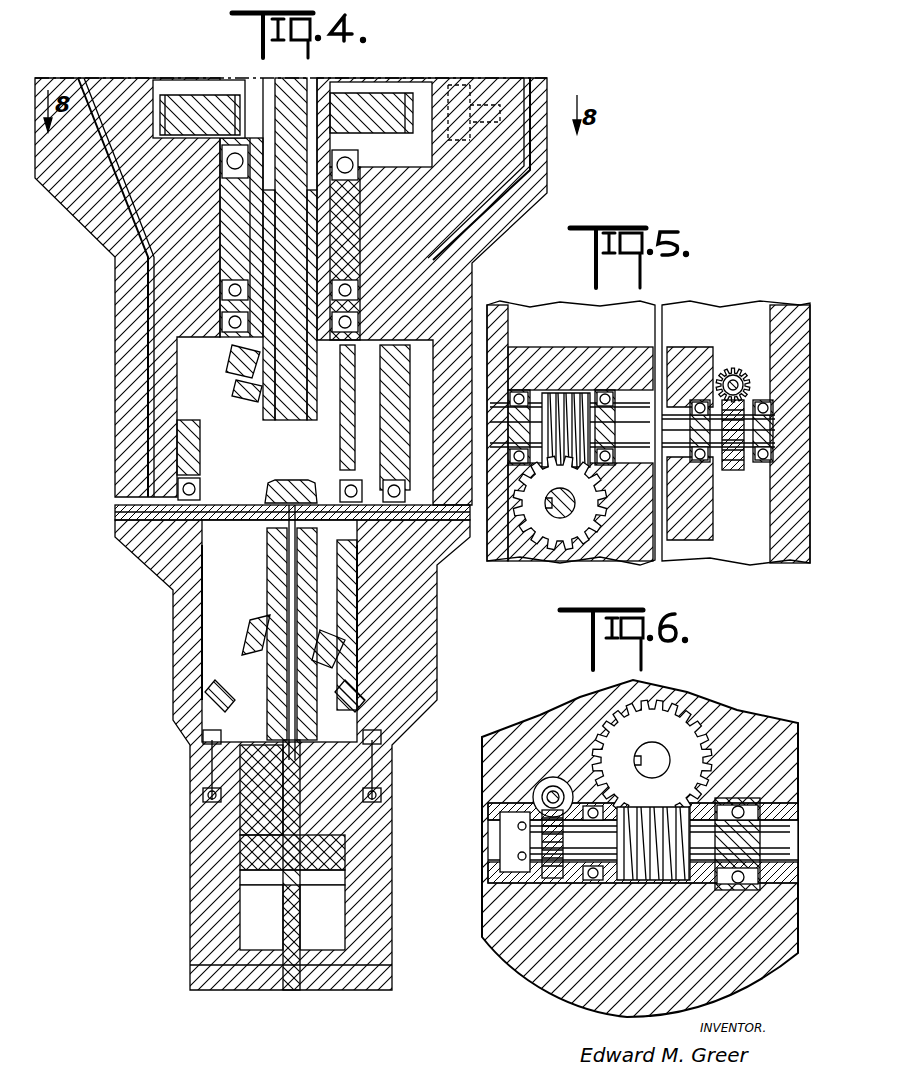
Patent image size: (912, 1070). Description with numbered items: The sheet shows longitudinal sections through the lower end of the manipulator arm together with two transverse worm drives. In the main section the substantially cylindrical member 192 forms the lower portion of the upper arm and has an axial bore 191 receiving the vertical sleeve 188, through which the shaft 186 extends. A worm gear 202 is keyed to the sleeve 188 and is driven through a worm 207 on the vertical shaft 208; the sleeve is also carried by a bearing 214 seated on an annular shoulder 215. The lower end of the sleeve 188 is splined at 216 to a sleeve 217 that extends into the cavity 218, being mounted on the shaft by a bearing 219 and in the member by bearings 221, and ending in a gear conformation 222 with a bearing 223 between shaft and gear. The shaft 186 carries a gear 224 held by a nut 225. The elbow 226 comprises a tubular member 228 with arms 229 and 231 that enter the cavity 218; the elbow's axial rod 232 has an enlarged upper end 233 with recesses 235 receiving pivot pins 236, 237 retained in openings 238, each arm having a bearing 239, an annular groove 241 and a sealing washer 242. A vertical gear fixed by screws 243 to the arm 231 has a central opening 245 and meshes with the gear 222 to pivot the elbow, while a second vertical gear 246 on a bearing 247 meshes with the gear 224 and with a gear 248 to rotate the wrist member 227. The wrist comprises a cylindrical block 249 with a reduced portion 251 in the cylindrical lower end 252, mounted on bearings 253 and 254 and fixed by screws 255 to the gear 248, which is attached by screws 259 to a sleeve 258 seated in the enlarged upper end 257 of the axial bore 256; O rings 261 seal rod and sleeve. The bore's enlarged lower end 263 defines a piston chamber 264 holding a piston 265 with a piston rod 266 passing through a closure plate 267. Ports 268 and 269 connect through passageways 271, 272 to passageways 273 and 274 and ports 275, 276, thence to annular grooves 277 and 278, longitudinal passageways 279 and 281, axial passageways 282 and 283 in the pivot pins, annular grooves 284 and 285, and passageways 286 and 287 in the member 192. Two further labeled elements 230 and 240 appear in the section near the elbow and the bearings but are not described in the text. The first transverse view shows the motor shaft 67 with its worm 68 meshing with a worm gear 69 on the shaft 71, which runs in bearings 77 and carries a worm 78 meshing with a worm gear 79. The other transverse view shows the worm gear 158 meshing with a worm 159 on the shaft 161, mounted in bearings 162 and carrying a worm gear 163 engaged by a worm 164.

In FIG. 4, the worm gear 202 is at (178, 97).
In FIG. 4, the vertical sleeve 188 is at (358, 94).
In FIG. 4, the vertical shaft 208 is at (466, 88).
In FIG. 4, the worm 207 is at (500, 108).
In FIG. 4, the cylindrical member 192 is at (508, 158).
In FIG. 4, the bearing 214 is at (228, 160).
In FIG. 4, the annular shoulder 215 is at (228, 182).
In FIG. 4, the spline 216 is at (250, 236).
In FIG. 4, the shaft 186 is at (333, 232).
In FIG. 4, the axial bore 191 is at (335, 250).
In FIG. 4, the sleeve 217 is at (340, 268).
In FIG. 4, the bearing 219 is at (345, 294).
In FIG. 4, the bearing 240 is at (362, 325).
In FIG. 4, the passageway 287 is at (488, 212).
In FIG. 4, the passageway 286 is at (140, 278).
In FIG. 4, the bearings 221 is at (228, 290).
In FIG. 4, the cavity 218 is at (185, 342).
In FIG. 4, the gear conformation 222 is at (233, 357).
In FIG. 4, the bearing 223 is at (235, 386).
In FIG. 4, the screws 243 is at (470, 345).
In FIG. 4, the gear 224 is at (262, 432).
In FIG. 4, the enlarged upper end 233 is at (270, 478).
In FIG. 4, the recesses 235 is at (266, 490).
In FIG. 4, the bearing 247 is at (337, 567).
In FIG. 4, the nut 225 is at (420, 432).
In FIG. 4, the arm 231 is at (410, 455).
In FIG. 4, the central opening 245 is at (405, 485).
In FIG. 4, the arm 229 is at (185, 450).
In FIG. 4, the bearing 239 is at (180, 485).
In FIG. 4, the openings 238 is at (127, 510).
In FIG. 4, the pivot pin 236 is at (118, 516).
In FIG. 4, the annular groove 284 is at (120, 548).
In FIG. 4, the axial passageway 282 is at (142, 570).
In FIG. 4, the sleeve 230 is at (242, 540).
In FIG. 4, the axial cylindrical rod 232 is at (283, 590).
In FIG. 4, the pivot pin 237 is at (430, 522).
In FIG. 4, the annular groove 285 is at (402, 523).
In FIG. 4, the washer 242 is at (392, 626).
In FIG. 4, the axial passageway 283 is at (400, 640).
In FIG. 4, the annular groove 241 is at (385, 652).
In FIG. 4, the second vertical gear 246 is at (400, 662).
In FIG. 4, the longitudinal passageway 281 is at (400, 672).
In FIG. 4, the longitudinal passageway 279 is at (200, 610).
In FIG. 4, the sleeve 258 is at (215, 630).
In FIG. 4, the elbow 226 is at (172, 638).
In FIG. 4, the port 275 is at (222, 655).
In FIG. 4, the gear 248 is at (235, 672).
In FIG. 4, the screws 259 is at (222, 700).
In FIG. 4, the passageway 273 is at (232, 710).
In FIG. 4, the enlarged upper end of bore 257 is at (215, 725).
In FIG. 4, the bearing 254 is at (220, 748).
In FIG. 4, the annular groove 278 is at (226, 770).
In FIG. 4, the axial bore 256 is at (210, 790).
In FIG. 4, the bearing 253 is at (206, 800).
In FIG. 4, the O rings 261 is at (372, 678).
In FIG. 4, the annular groove 277 is at (382, 700).
In FIG. 4, the tubular member 228 is at (388, 708).
In FIG. 4, the port 276 is at (432, 700).
In FIG. 4, the screws 255 is at (386, 740).
In FIG. 4, the passageway 274 is at (382, 770).
In FIG. 4, the reduced diameter portion 251 is at (376, 790).
In FIG. 4, the cylindrical lower end 252 is at (376, 806).
In FIG. 4, the passageway 272 is at (352, 830).
In FIG. 4, the port 269 is at (332, 845).
In FIG. 4, the cylindrical block 249 is at (372, 890).
In FIG. 4, the enlarged lower end of bore 263 is at (345, 912).
In FIG. 4, the piston rod 266 is at (342, 926).
In FIG. 4, the passageway 271 is at (240, 850).
In FIG. 4, the wrist member 227 is at (192, 875).
In FIG. 4, the piston 265 is at (262, 900).
In FIG. 4, the piston chamber 264 is at (265, 910).
In FIG. 4, the port 268 is at (270, 962).
In FIG. 4, the closure plate 267 is at (318, 975).
In FIG. 5, the bearings 77 is at (520, 392).
In FIG. 5, the worm 78 is at (568, 392).
In FIG. 5, the shaft 71 is at (626, 420).
In FIG. 5, the motor shaft 67 is at (728, 378).
In FIG. 5, the worm 68 is at (743, 367).
In FIG. 5, the worm gear 69 is at (735, 470).
In FIG. 5, the worm gear 79 is at (578, 540).
In FIG. 6, the worm gear 158 is at (688, 745).
In FIG. 6, the worm 164 is at (553, 777).
In FIG. 6, the bearings 162 is at (743, 805).
In FIG. 6, the worm gear 163 is at (556, 880).
In FIG. 6, the worm 159 is at (648, 882).
In FIG. 6, the shaft 161 is at (710, 850).